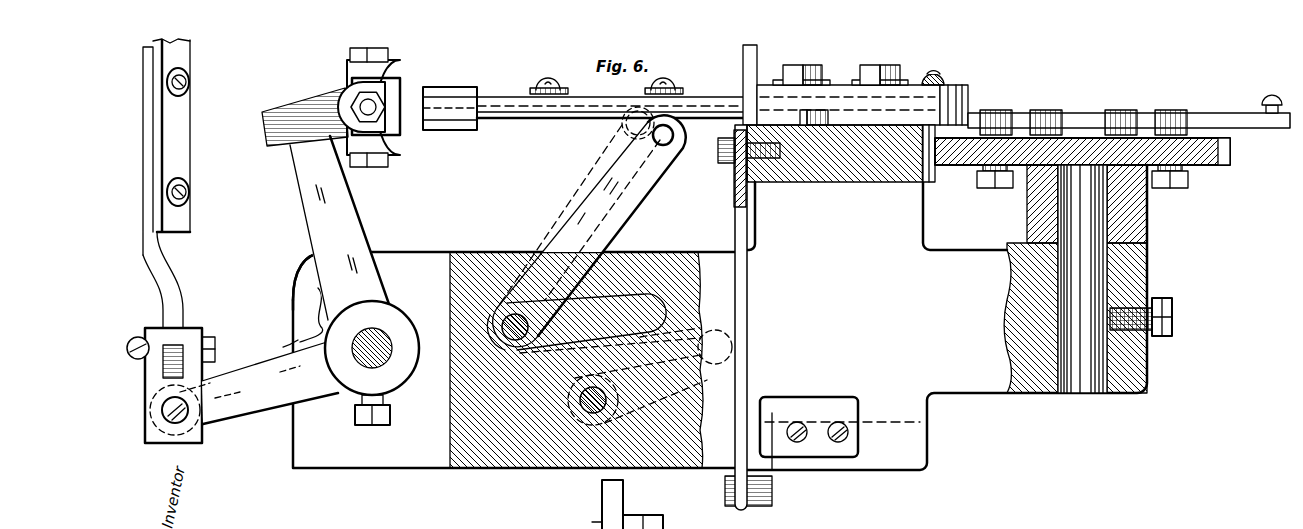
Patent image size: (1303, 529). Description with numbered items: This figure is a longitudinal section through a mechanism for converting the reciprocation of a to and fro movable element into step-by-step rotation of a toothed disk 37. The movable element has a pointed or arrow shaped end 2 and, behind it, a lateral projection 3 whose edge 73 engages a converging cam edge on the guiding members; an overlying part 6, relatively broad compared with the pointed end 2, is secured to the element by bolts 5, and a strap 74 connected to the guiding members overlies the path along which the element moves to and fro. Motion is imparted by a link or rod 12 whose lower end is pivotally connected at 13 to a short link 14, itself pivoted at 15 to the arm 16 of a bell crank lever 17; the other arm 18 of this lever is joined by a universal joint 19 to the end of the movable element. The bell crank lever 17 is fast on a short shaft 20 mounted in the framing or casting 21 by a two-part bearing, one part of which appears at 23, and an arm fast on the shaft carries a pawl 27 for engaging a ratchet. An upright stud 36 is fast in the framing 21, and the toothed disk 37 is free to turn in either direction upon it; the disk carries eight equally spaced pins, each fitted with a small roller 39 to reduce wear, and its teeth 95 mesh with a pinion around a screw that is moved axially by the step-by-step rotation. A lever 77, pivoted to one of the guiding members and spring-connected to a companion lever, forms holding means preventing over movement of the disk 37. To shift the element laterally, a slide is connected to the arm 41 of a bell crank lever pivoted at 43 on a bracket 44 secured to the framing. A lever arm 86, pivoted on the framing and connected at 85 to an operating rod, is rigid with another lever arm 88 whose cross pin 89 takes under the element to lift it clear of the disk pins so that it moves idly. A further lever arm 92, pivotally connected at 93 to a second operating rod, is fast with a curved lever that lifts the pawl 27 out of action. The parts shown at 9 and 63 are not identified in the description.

The pointed end 2 is at (858, 110).
The lateral projection 3 is at (590, 107).
The bolts 5 is at (548, 84).
The overlying part 6 is at (690, 105).
The plate 9 is at (753, 56).
The link or rod 12 is at (157, 68).
The pivotal connection 13 is at (140, 341).
The short link or member 14 is at (152, 380).
The pivot 15 is at (165, 410).
The arm of bell crank lever 16 is at (248, 369).
The bell crank lever 17 is at (303, 317).
The arm of bell crank lever 18 is at (305, 170).
The universal joint 19 is at (348, 95).
The short shaft 20 is at (368, 336).
The framing or casting 21 is at (462, 248).
The bearing part 23 is at (292, 283).
The pawl 27 is at (665, 520).
The upright stud 36 is at (1100, 270).
The toothed disk 37 is at (1130, 165).
The roller 39 is at (1003, 113).
The arm of bell crank lever 41 is at (735, 213).
The pivot 43 is at (725, 482).
The bracket 44 is at (818, 404).
The clamp 63 is at (805, 70).
The edge of laterally projecting part 73 is at (820, 110).
The strap 74 is at (948, 82).
The lever 77 is at (1078, 117).
The pivotal connection 85 is at (658, 262).
The lever arm 86 is at (622, 262).
The lever arm 88 is at (640, 190).
The cross pin 89 is at (676, 135).
The lever arm 92 is at (745, 380).
The pivotal connection 93 is at (740, 335).
The teeth 95 is at (1230, 148).